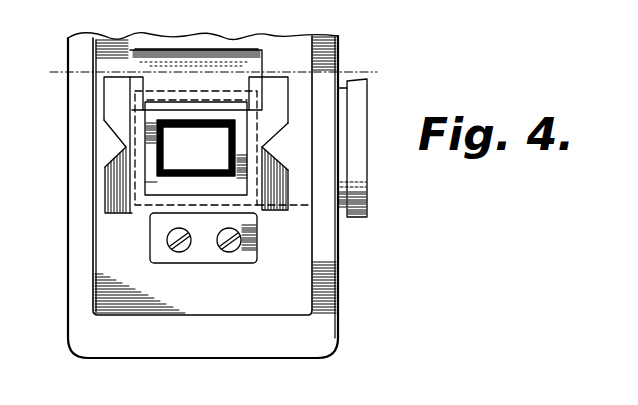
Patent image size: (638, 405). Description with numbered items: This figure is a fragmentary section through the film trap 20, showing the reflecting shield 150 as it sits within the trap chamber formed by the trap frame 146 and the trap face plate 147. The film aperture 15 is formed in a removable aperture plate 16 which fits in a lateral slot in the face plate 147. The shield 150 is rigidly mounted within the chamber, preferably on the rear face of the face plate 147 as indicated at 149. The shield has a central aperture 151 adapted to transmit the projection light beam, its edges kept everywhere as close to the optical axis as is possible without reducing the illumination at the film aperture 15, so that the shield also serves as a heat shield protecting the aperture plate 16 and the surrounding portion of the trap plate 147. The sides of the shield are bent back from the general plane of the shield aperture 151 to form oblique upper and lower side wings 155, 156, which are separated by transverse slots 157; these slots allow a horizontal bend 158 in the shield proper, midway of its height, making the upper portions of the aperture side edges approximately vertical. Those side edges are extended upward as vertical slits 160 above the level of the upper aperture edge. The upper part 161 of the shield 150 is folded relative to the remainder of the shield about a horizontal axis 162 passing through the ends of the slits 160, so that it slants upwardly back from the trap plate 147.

The film aperture 15 is at (175, 182).
The aperture plate 16 is at (367, 82).
The film trap 20 is at (349, 280).
The trap frame 146 is at (255, 346).
The trap face plate 147 is at (306, 304).
The mounting of shield on rear face of plate 149 is at (178, 258).
The reflecting shield 150 is at (235, 50).
The central aperture 151 is at (212, 110).
The upper side wings 155 is at (107, 107).
The lower side wings 156 is at (110, 198).
The transverse slots 157 is at (125, 151).
The horizontal bend 158 is at (146, 160).
The vertical slits 160 is at (246, 85).
The upper part of shield 161 is at (171, 55).
The horizontal axis 162 is at (362, 70).